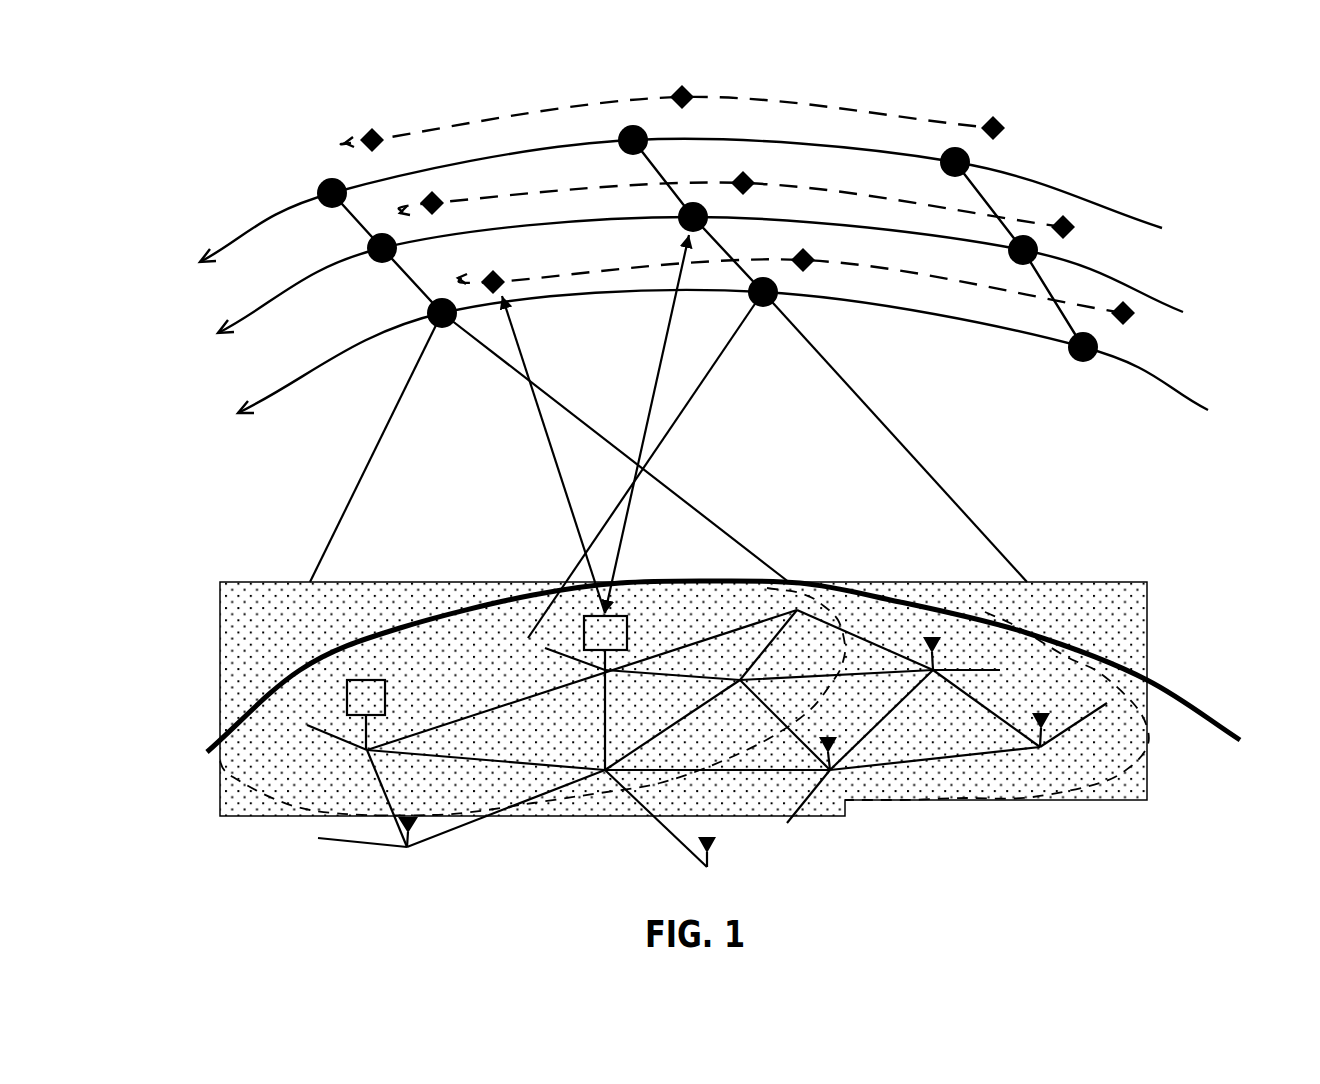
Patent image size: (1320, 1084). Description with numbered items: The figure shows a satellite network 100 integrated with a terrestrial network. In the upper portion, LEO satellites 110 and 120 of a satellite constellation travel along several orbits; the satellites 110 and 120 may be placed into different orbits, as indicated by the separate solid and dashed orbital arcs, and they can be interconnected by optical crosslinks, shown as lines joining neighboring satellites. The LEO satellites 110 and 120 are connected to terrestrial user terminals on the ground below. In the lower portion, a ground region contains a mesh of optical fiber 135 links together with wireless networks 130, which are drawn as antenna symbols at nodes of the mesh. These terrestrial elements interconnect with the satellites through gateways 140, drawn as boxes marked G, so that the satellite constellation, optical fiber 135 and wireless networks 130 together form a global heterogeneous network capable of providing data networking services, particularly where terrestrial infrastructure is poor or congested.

The satellite network 100 is at (163, 88).
The LEO satellites 110 is at (663, 371).
The LEO satellites 120 is at (778, 202).
The wireless networks 130 is at (739, 757).
The optical fiber 135 is at (691, 740).
The gateways 140 is at (523, 687).